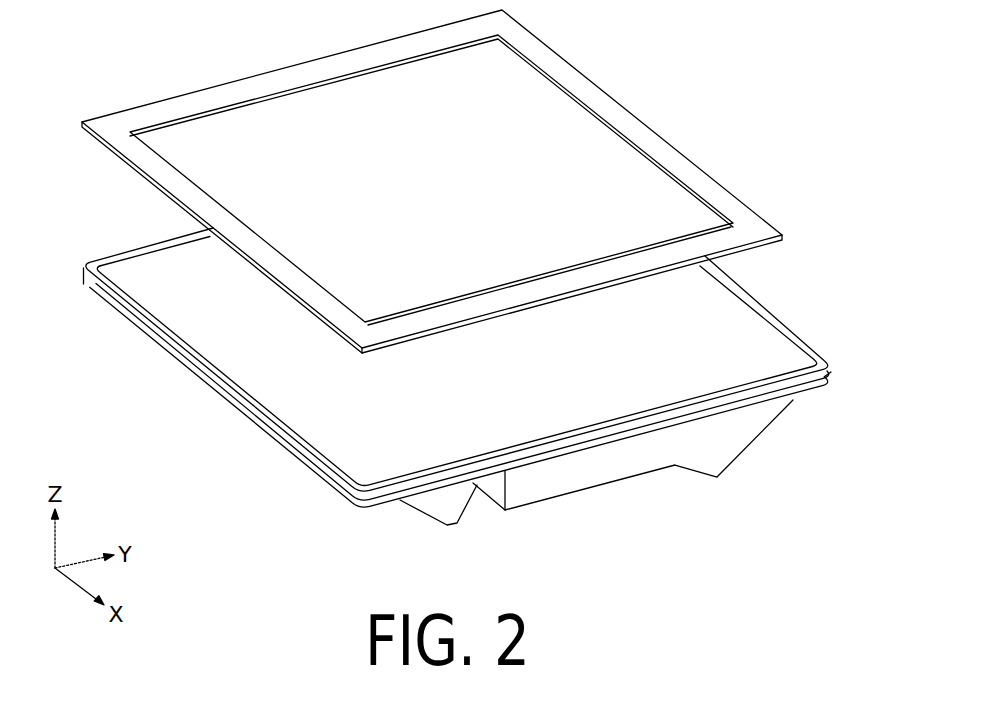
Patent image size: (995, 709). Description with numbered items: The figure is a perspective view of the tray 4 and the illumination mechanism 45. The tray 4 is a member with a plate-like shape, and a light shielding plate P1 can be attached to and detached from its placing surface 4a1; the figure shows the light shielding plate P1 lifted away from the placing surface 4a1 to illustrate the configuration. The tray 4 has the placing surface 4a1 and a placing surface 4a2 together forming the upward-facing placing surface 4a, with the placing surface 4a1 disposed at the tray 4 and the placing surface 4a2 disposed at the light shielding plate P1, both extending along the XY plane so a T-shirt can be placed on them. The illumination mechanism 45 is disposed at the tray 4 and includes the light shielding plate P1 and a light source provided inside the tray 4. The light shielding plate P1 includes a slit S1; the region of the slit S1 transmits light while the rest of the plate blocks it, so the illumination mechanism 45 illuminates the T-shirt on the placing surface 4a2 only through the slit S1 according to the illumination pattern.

The light shielding plate P1 is at (323, 68).
The slit S1 is at (573, 93).
The tray 4 is at (730, 457).
The placing surface 4a is at (794, 107).
The placing surface 4a1 is at (781, 343).
The placing surface 4a2 is at (705, 215).
The illumination mechanism 45 is at (562, 283).